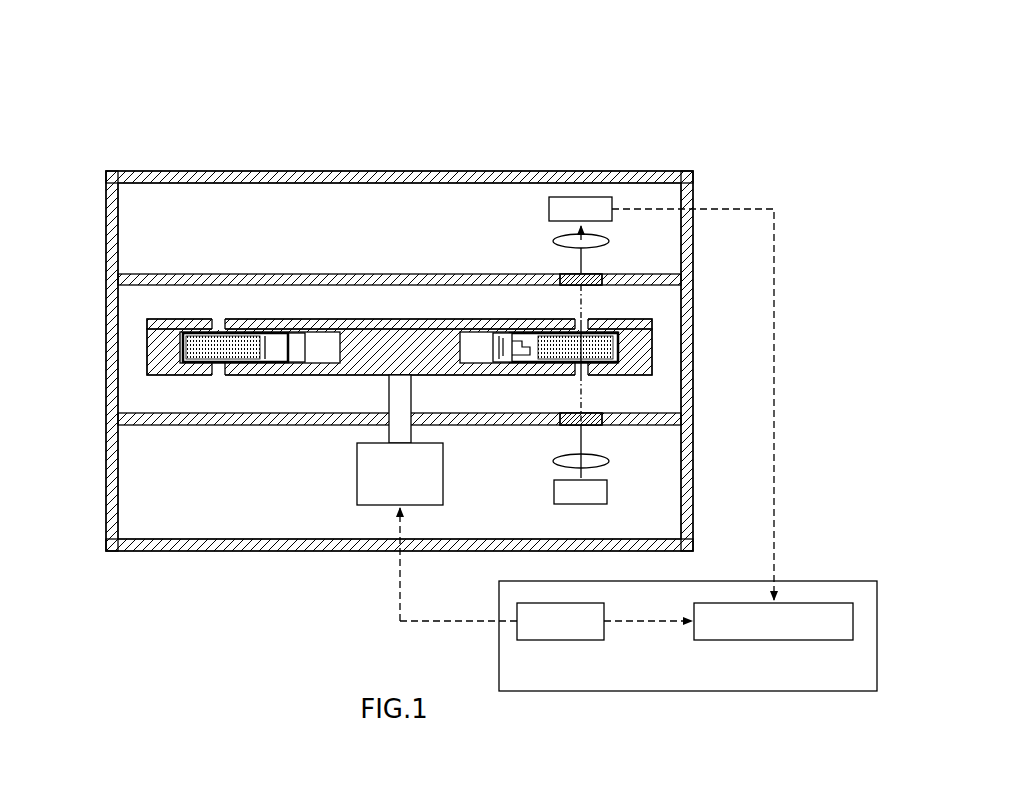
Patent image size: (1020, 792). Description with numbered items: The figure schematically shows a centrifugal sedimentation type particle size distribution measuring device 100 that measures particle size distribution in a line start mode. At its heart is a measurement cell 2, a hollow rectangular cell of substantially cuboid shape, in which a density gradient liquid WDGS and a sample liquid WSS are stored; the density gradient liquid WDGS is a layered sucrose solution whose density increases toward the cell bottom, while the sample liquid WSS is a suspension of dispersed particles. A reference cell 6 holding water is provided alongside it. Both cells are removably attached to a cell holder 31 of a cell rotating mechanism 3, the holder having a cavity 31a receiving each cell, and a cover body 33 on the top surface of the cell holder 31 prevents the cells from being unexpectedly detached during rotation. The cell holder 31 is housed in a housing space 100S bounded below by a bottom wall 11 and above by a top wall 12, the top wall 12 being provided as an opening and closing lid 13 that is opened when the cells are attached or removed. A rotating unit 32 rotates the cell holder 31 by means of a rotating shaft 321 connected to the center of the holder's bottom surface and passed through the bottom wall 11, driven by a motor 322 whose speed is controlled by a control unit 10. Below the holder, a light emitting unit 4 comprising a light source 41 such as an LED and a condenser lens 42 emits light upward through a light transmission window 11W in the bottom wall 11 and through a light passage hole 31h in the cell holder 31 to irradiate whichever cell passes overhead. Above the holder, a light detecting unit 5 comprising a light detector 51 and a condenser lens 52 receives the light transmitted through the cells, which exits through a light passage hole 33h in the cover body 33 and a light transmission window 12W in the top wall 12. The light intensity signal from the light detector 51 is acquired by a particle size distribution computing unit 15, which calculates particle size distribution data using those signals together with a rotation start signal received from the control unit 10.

The centrifugal sedimentation type particle size distribution measuring device 100 is at (171, 96).
The housing space 100S is at (399, 297).
The opening and closing lid 13 is at (106, 211).
The top wall 12 is at (654, 286).
The light transmission window 12W is at (592, 283).
The bottom wall 11 is at (653, 414).
The light transmission window 11W is at (592, 428).
The cell rotating mechanism 3 is at (405, 385).
The cell holder 31 is at (150, 356).
The holder cavity 31a is at (347, 336).
The light passage hole 31h is at (214, 373).
The cover body 33 is at (157, 322).
The light passage hole 33h is at (217, 322).
The reference cell 6 is at (305, 348).
The measurement cell 2 is at (493, 348).
The sample liquid WSS is at (503, 354).
The density gradient liquid WDGS is at (612, 348).
The rotating unit 32 is at (340, 441).
The rotating shaft 321 is at (388, 408).
The motor 322 is at (357, 474).
The light detecting unit 5 is at (543, 220).
The light detector 51 is at (549, 207).
The condenser lens 52 is at (557, 237).
The light emitting unit 4 is at (543, 484).
The light source 41 is at (556, 494).
The condenser lens 42 is at (555, 461).
The control unit 10 is at (560, 641).
The particle size distribution computing unit 15 is at (774, 641).